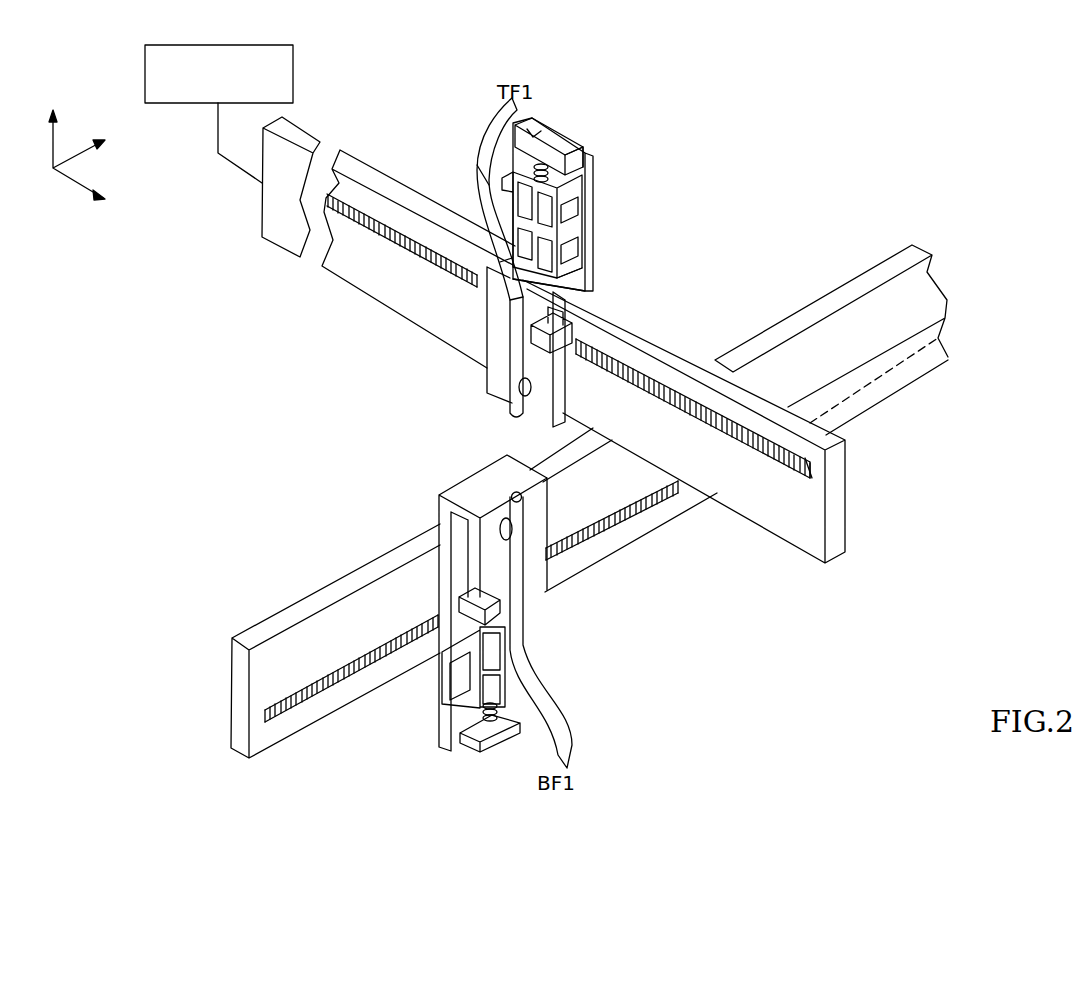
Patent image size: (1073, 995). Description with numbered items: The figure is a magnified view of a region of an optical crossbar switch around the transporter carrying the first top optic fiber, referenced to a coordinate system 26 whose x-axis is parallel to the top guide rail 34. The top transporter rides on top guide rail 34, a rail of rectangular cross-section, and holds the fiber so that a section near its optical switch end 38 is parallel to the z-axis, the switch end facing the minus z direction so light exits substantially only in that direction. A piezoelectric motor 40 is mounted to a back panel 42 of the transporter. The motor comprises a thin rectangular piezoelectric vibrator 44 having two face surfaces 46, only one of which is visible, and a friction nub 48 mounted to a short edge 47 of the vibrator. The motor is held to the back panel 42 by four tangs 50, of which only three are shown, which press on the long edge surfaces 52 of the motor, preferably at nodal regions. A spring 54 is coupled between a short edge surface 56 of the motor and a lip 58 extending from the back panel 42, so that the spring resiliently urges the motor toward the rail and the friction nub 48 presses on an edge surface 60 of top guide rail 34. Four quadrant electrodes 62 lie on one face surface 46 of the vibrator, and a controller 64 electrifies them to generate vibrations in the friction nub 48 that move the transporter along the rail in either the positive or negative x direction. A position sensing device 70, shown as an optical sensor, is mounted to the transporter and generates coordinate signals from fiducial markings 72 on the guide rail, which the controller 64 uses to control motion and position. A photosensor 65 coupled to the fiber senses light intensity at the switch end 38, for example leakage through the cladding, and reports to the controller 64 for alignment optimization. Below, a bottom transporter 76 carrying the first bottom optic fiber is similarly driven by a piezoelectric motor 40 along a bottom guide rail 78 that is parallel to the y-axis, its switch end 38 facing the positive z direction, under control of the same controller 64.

The coordinate system 26 is at (68, 218).
The top guide rail 34 is at (713, 421).
The optical switch end 38 is at (515, 494).
The piezoelectric motor 40 is at (470, 242).
The back panel 42 is at (545, 426).
The piezoelectric vibrator 44 is at (508, 228).
The face surface 46 is at (535, 218).
The short edge 47 is at (598, 278).
The friction nub 48 is at (592, 292).
The tang 50 is at (508, 212).
The long edge surface 52 is at (512, 233).
The spring 54 is at (548, 145).
The short edge surface 56 is at (562, 183).
The lip 58 is at (556, 158).
The edge surface 60 is at (640, 333).
The quadrant electrode 62 is at (520, 268).
The controller 64 is at (293, 88).
The photosensor 65 is at (530, 395).
The position sensing device 70 is at (575, 327).
The fiducial markings 72 is at (800, 470).
The bottom transporter 76 is at (562, 615).
The bottom guide rail 78 is at (335, 652).